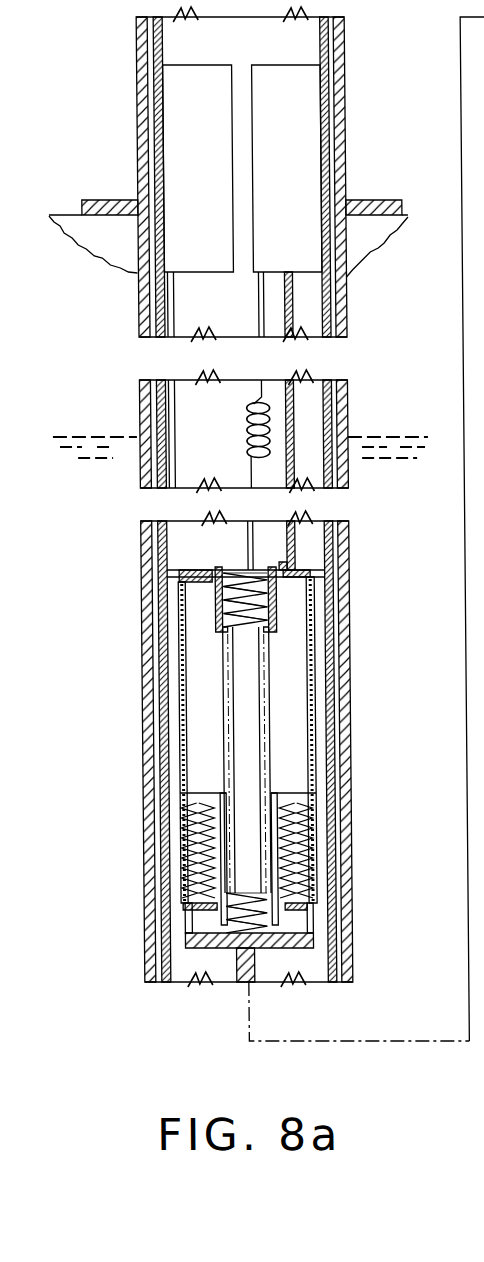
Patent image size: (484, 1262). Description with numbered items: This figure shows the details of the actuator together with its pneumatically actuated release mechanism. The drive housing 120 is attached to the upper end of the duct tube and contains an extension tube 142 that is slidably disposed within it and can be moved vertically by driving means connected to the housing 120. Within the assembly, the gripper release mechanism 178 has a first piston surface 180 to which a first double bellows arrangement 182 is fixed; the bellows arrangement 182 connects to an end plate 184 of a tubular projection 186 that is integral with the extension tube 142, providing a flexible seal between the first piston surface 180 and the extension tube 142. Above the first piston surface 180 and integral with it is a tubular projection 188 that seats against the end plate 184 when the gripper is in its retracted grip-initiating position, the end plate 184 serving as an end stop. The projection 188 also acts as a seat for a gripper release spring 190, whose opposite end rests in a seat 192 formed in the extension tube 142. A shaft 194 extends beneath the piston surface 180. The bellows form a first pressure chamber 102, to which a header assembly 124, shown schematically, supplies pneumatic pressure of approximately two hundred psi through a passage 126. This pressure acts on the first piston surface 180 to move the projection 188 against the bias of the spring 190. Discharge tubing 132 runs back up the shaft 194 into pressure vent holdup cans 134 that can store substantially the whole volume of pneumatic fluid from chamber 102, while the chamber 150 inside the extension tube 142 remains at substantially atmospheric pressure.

The first pressure chamber 102 is at (166, 668).
The drive housing 120 is at (339, 308).
The header assembly 124 is at (169, 160).
The passage 126 is at (170, 307).
The discharge tubing 132 is at (248, 540).
The pressure vent holdup cans 134 is at (311, 153).
The extension tube 142 is at (313, 402).
The chamber within the extension tube 150 is at (221, 426).
The gripper release mechanism 178 is at (313, 940).
The first piston surface 180 is at (183, 947).
The first double bellows arrangement 182 is at (174, 857).
The end plate 184 is at (175, 815).
The tubular projection 186 is at (176, 730).
The tubular projection 188 is at (272, 845).
The gripper release spring 190 is at (259, 890).
The seat 192 is at (268, 618).
The shaft 194 is at (231, 970).